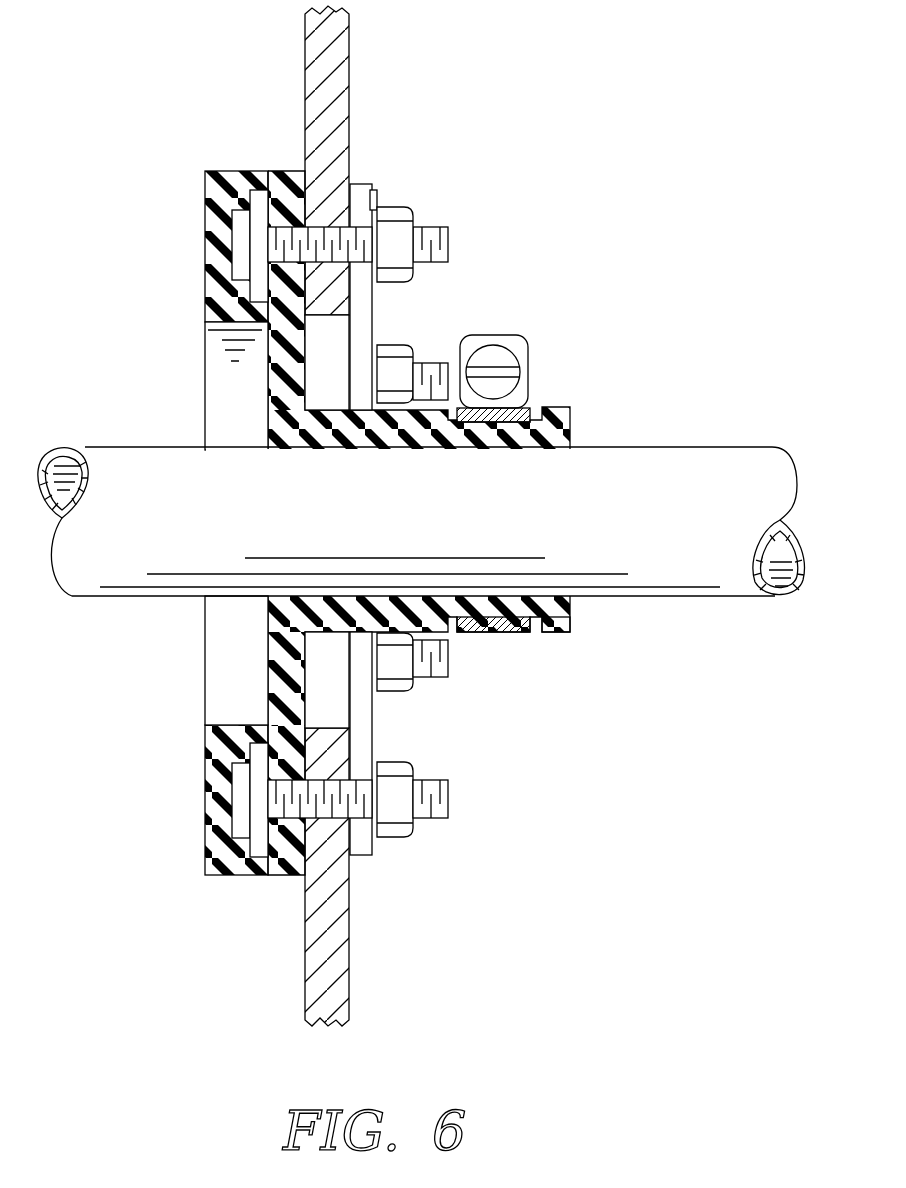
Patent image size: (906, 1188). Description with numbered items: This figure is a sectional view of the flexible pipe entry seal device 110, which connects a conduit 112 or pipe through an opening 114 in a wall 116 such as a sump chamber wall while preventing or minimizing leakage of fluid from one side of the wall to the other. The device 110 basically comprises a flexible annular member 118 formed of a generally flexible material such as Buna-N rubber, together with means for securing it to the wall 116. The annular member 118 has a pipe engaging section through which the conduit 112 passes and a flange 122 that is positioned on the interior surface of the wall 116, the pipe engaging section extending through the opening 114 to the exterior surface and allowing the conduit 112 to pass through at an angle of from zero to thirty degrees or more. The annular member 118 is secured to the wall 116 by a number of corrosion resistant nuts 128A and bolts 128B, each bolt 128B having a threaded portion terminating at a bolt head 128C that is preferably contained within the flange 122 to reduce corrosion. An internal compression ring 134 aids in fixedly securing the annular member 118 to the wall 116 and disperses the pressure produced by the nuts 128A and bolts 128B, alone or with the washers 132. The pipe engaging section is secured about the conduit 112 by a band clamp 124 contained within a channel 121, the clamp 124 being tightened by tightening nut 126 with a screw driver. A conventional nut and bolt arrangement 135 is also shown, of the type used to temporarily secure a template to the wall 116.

The device 110 is at (115, 785).
The conduit 112 is at (655, 541).
The opening 114 is at (345, 375).
The wall 116 is at (325, 85).
The flexible annular member 118 is at (245, 642).
The channel 121 is at (537, 632).
The flange 122 is at (283, 682).
The band clamp 124 is at (492, 633).
The nut 126 is at (505, 358).
The nuts 128A is at (400, 282).
The bolts 128B is at (430, 252).
The bolt head 128C is at (238, 188).
The washers 132 is at (375, 752).
The internal compression ring 134 is at (357, 185).
The nut and bolt arrangement 135 is at (375, 198).